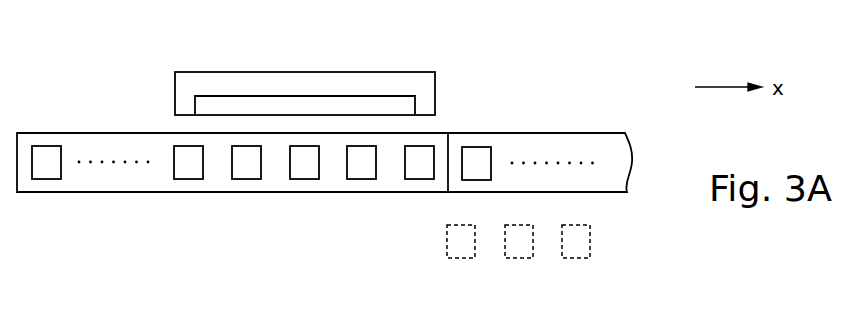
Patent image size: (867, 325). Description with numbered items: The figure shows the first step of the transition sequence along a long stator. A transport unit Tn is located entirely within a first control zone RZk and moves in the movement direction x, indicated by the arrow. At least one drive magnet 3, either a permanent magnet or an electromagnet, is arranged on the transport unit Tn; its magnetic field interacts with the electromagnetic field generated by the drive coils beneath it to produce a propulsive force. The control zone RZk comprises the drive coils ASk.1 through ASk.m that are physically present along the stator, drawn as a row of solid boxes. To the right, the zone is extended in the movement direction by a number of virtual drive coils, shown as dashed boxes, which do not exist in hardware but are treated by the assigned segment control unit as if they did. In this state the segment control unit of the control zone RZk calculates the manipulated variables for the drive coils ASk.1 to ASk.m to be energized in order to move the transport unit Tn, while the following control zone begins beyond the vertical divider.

The first control zone RZk is at (68, 132).
The transport unit Tn is at (228, 72).
The drive magnet 3 is at (337, 95).
The drive coil ASk.1 is at (40, 179).
The drive coil ASk.m is at (420, 179).